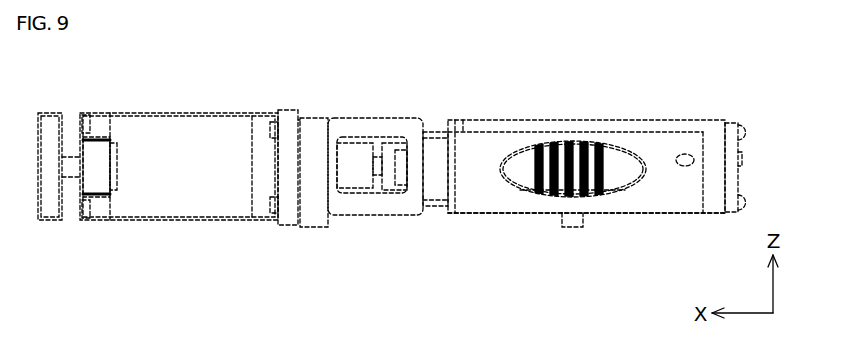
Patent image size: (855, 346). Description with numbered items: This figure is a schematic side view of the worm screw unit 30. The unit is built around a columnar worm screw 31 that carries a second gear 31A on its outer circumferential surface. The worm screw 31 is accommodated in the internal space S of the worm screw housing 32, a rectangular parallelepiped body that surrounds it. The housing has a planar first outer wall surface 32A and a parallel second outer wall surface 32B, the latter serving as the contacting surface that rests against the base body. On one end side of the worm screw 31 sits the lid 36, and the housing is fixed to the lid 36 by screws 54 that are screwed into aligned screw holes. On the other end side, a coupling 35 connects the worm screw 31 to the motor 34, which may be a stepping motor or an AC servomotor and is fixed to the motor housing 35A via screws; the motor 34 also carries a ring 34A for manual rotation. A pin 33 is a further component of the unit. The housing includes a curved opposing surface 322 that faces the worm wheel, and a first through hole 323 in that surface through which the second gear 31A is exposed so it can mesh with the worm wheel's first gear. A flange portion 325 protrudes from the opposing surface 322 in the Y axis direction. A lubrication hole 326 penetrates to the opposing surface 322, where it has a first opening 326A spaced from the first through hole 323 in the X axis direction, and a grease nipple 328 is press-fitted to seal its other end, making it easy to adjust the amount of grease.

The worm screw unit 30 is at (733, 100).
The worm screw 31 is at (626, 176).
The second gear 31A is at (558, 148).
The worm screw housing 32 is at (692, 125).
The first outer wall surface 32A is at (613, 122).
The second outer wall surface 32B is at (645, 213).
The pin 33 is at (572, 228).
The motor 34 is at (180, 130).
The ring 34A is at (50, 130).
The coupling 35 is at (357, 153).
The motor housing 35A is at (407, 127).
The lid 36 is at (736, 178).
The screws 54 is at (746, 133).
The opposing surface 322 is at (470, 200).
The first through hole 323 is at (521, 183).
The flange portion 325 is at (492, 125).
The lubrication hole 326 is at (685, 168).
The first opening 326A is at (683, 155).
The grease nipple 328 is at (742, 158).
The internal space S is at (606, 190).